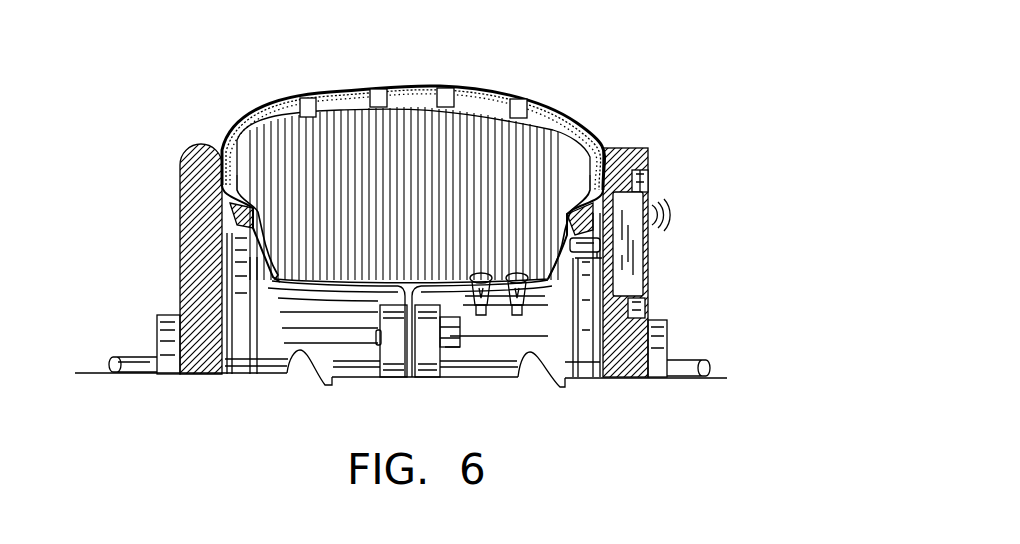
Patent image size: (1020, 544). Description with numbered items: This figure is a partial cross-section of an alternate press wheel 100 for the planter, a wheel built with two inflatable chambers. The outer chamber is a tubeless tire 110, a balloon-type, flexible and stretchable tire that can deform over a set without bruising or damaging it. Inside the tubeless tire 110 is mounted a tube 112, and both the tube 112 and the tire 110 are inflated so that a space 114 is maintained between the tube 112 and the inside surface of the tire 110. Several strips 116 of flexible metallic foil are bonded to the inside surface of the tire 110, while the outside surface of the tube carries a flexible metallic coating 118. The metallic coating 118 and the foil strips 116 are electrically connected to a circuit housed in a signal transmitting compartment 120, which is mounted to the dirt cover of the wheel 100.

The press wheel 100 is at (424, 195).
The tubeless tire 110 is at (400, 88).
The tube 112 is at (374, 155).
The space 114 is at (602, 132).
The strips of flexible metallic foil 116 is at (537, 100).
The flexible metallic coating 118 is at (330, 92).
The signal transmitting compartment 120 is at (632, 252).